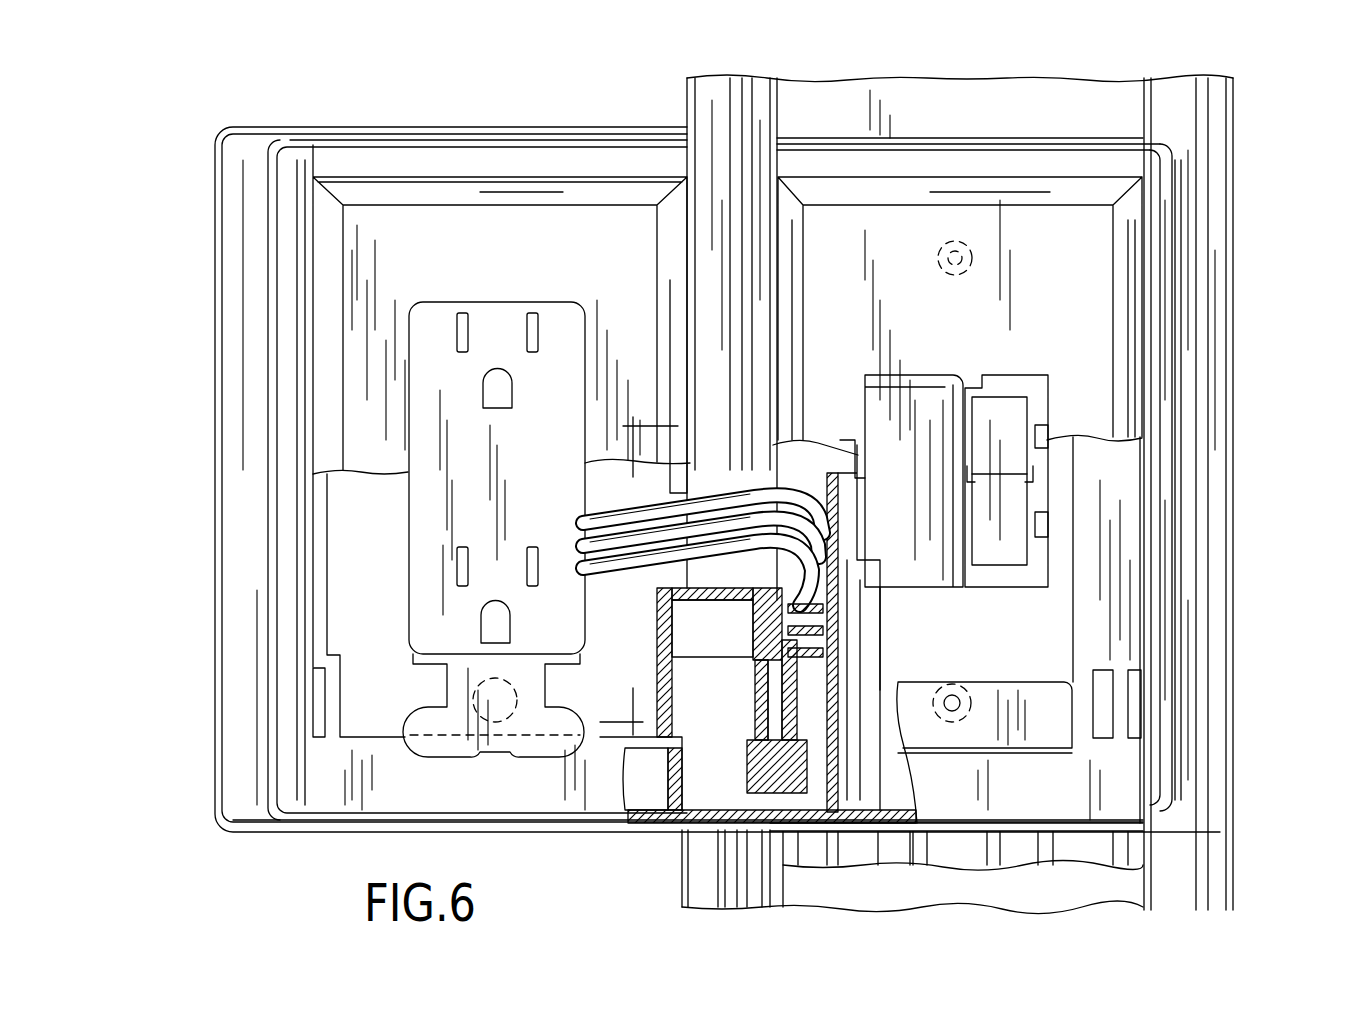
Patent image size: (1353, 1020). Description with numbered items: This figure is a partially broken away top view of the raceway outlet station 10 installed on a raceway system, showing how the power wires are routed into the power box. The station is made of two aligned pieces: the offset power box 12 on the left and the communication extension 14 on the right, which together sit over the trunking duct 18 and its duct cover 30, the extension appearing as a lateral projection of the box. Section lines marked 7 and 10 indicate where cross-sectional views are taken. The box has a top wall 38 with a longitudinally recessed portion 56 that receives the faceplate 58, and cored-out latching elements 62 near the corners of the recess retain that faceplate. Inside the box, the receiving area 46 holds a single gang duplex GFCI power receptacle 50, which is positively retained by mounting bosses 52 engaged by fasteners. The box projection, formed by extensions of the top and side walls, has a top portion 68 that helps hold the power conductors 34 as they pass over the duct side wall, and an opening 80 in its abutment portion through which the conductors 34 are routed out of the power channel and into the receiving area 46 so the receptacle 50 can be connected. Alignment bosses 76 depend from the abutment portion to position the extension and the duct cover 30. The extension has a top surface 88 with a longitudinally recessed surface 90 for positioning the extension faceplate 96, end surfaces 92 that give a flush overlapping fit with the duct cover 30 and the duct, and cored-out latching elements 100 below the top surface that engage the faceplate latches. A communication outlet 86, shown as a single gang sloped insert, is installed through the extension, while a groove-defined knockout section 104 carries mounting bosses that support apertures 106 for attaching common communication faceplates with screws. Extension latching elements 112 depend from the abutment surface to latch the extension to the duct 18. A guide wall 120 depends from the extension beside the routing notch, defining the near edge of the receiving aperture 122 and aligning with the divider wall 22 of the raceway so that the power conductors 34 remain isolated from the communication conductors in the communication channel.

The section line 7- 7 is at (225, 722).
The raceway outlet station 10 is at (685, 283).
The offset power box 12 is at (252, 290).
The communication extension 14 is at (1222, 515).
The trunking duct 18 is at (1214, 862).
The divider wall 22 is at (842, 805).
The duct cover 30 is at (1024, 129).
The power conductors 34 is at (633, 563).
The top wall 38 is at (285, 415).
The receiving area 46 is at (370, 538).
The power receptacle 50 is at (492, 318).
The mounting bosses 52 is at (478, 693).
The recessed portion 56 is at (510, 793).
The faceplate 58 is at (418, 222).
The cored-out latching elements 62 is at (313, 690).
The top portion 68 is at (740, 178).
The alignment bosses 76 is at (780, 763).
The opening 80 is at (722, 563).
The communication outlet 86 is at (943, 398).
The top surface 88 is at (1168, 228).
The recessed surface 90 is at (826, 440).
The end surfaces 92 is at (823, 138).
The extension faceplate 96 is at (1075, 302).
The cored-out latching elements 100 is at (1128, 692).
The knockout section 104 is at (1040, 737).
The apertures 106 is at (950, 712).
The extension latching elements 112 is at (1040, 655).
The guide wall 120 is at (1040, 612).
The receiving aperture 122 is at (1055, 643).